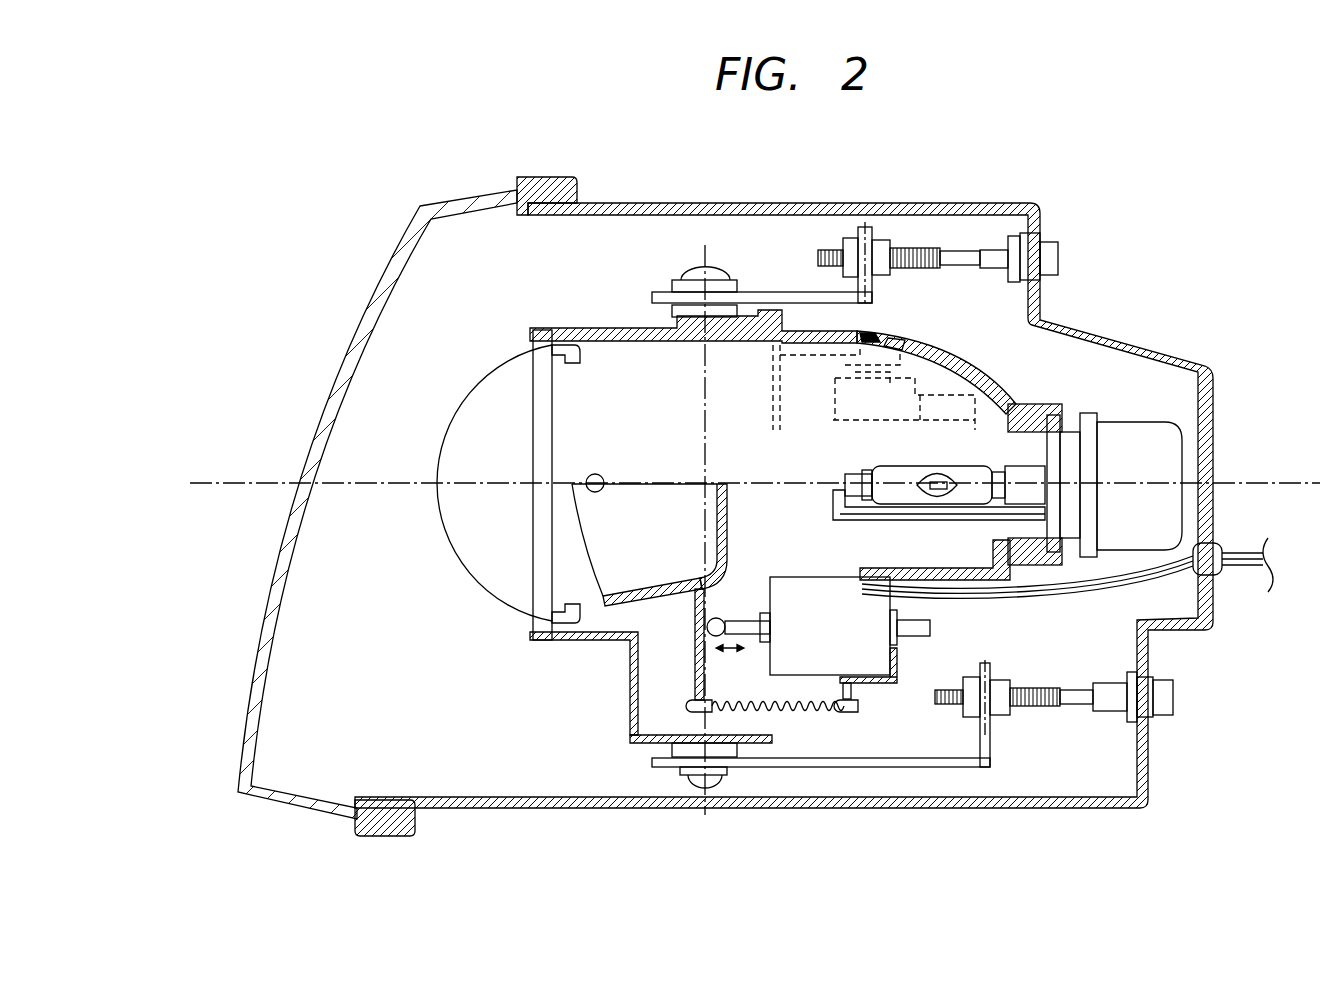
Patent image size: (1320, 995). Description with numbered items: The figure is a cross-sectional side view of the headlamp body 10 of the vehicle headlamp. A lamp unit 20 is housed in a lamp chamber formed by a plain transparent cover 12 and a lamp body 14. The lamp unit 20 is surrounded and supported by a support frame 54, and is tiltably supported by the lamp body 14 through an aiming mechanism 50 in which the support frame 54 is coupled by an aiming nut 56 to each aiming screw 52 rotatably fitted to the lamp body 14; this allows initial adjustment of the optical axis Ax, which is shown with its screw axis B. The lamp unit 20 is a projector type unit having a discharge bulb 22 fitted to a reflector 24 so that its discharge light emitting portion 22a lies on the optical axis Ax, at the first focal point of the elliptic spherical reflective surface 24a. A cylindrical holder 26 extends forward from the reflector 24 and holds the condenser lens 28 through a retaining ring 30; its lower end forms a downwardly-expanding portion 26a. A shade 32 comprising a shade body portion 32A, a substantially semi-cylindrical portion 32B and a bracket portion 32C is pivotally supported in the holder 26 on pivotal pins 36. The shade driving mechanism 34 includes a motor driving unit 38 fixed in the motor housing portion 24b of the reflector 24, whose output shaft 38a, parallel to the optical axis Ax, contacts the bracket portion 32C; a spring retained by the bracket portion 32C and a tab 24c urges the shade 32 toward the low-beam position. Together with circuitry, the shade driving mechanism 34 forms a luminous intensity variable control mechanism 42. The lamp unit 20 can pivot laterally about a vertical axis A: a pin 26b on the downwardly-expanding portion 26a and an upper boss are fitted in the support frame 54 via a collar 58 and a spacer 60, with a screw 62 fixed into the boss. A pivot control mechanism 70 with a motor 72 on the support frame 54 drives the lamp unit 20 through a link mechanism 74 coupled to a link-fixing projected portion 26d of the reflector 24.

The headlamp body 10 is at (355, 212).
The plain transparent cover 12 is at (370, 305).
The lamp body 14 is at (1042, 216).
The lamp unit 20 is at (545, 290).
The discharge bulb 22 is at (868, 465).
The discharge light emitting portion 22a is at (938, 490).
The reflector 24 is at (1003, 393).
The elliptic spherical reflective surface 24a is at (960, 404).
The motor housing portion 24b is at (900, 673).
The tab 24c is at (860, 698).
The holder 26 is at (615, 328).
The downwardly-expanding portion 26a is at (630, 690).
The pin 26b is at (710, 790).
The link-fixing projected portion 26d is at (830, 420).
The condenser lens 28 is at (470, 385).
The retaining ring 30 is at (530, 330).
The shade 32 is at (655, 480).
The shade body portion 32A is at (716, 530).
The substantially semi-cylindrical portion 32B is at (653, 586).
The bracket portion 32C is at (695, 650).
The shade driving mechanism 34 is at (795, 715).
The pivotal pin 36 is at (593, 474).
The motor driving unit 38 is at (800, 578).
The output shaft 38a is at (748, 620).
The luminous intensity variable control mechanism 42 is at (870, 728).
The aiming mechanism 50 is at (942, 230).
The aiming screw 52 is at (930, 262).
The support frame 54 is at (757, 292).
The aiming nut 56 is at (841, 263).
The collar 58 is at (690, 279).
The spacer 60 is at (678, 311).
The screw 62 is at (703, 266).
The pivot control mechanism 70 is at (992, 352).
The motor 72 is at (930, 392).
The link mechanism 74 is at (868, 330).
The vertical axis A is at (703, 383).
The aiming screw axis B is at (860, 245).
The optical axis Ax is at (340, 488).